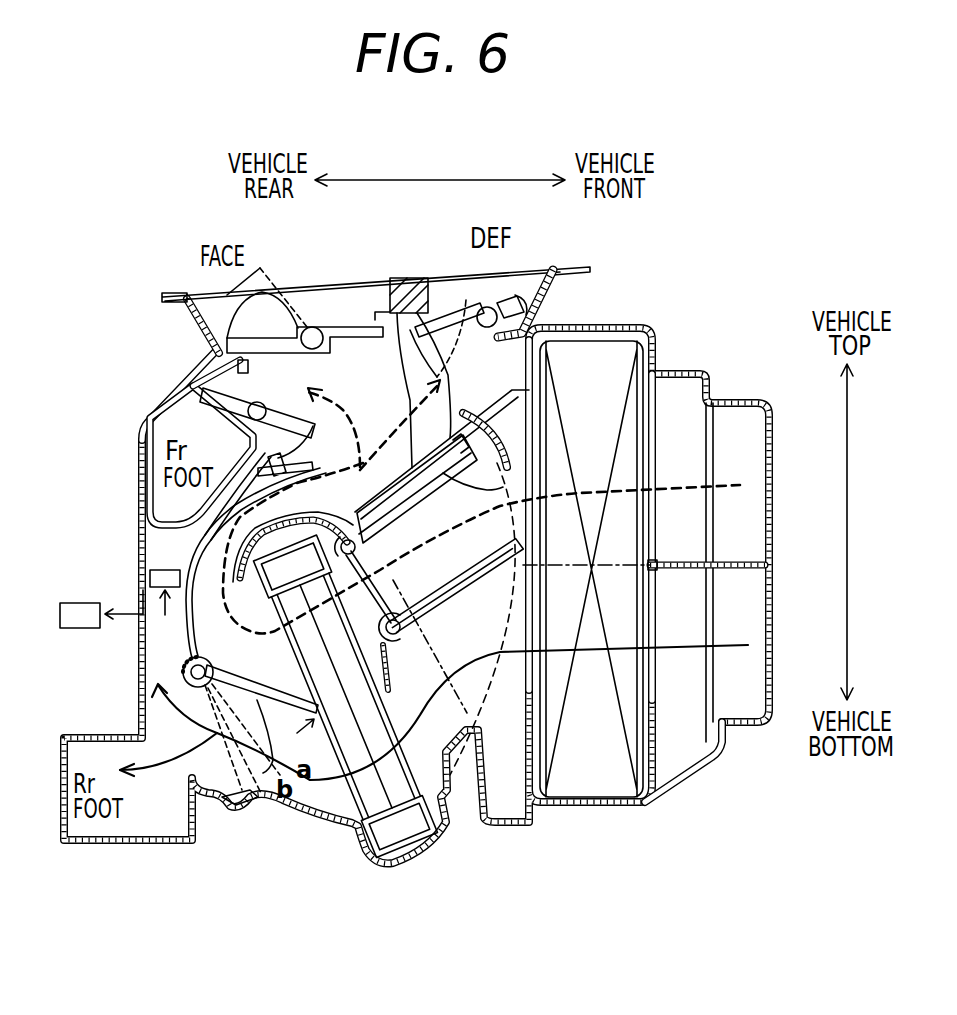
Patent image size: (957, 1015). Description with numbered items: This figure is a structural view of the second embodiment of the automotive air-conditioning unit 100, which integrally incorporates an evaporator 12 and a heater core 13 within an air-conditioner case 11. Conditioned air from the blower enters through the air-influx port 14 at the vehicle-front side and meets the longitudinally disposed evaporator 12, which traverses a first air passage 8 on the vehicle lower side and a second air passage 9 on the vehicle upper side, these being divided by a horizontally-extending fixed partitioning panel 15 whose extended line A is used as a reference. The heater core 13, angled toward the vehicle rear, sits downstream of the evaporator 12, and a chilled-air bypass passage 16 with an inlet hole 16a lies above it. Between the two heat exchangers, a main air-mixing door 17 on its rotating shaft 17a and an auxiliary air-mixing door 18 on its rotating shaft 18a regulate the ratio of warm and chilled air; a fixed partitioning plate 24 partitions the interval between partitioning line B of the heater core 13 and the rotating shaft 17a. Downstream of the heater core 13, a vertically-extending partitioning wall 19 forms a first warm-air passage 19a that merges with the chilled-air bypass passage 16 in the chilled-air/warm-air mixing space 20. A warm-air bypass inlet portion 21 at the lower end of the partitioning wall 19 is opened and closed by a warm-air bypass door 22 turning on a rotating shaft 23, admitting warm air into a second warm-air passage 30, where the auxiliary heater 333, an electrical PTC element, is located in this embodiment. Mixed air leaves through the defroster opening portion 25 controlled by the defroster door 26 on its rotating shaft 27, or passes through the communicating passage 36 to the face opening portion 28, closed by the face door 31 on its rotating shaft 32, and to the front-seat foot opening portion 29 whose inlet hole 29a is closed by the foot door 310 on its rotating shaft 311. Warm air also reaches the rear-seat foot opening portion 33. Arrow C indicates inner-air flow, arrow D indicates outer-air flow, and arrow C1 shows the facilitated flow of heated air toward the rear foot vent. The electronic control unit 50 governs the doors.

The first air passage 8 is at (735, 697).
The second air passage 9 is at (737, 430).
The air-conditioner case 11 is at (655, 325).
The evaporator 12 is at (610, 370).
The heater core 13 is at (383, 787).
The air-influx port 14 is at (770, 520).
The partitioning panel 15 is at (740, 568).
The chilled-air bypass passage 16 is at (377, 312).
The inlet hole 16a is at (466, 300).
The main air-mixing door 17 is at (520, 490).
The rotating shaft 17a is at (170, 553).
The auxiliary air-mixing door 18 is at (458, 585).
The rotating shaft 18a is at (330, 787).
The partitioning wall 19 is at (157, 565).
The first warm-air passage 19a is at (177, 617).
The chilled-air/warm-air mixing space 20 is at (370, 400).
The warm-air bypass inlet portion 21 is at (213, 780).
The warm-air bypass door 22 is at (257, 787).
The rotating shaft 23 is at (175, 672).
The fixed partitioning plate 24 is at (450, 745).
The defroster opening portion 25 is at (522, 280).
The defroster door 26 is at (400, 278).
The rotating shaft 27 is at (490, 305).
The face opening portion 28 is at (300, 310).
The front-seat foot opening portion 29 is at (157, 427).
The inlet hole 29a is at (210, 367).
The second warm-air passage 30 is at (170, 550).
The face door 31 is at (227, 338).
The rotating shaft 32 is at (190, 297).
The rear-seat foot opening portion 33 is at (123, 827).
The communicating passage 36 is at (387, 452).
The electronic control unit 50 is at (100, 626).
The air-conditioning unit 100 is at (712, 347).
The foot door 310 is at (200, 400).
The rotating shaft 311 is at (205, 375).
The auxiliary heater 333 is at (150, 577).
The extended line A is at (566, 569).
The partitioning line B is at (348, 790).
The arrow indicating inner-air flow C is at (605, 630).
The arrow indicating warm-air flow C1 is at (160, 773).
The arrow indicating outer-air flow D is at (685, 483).